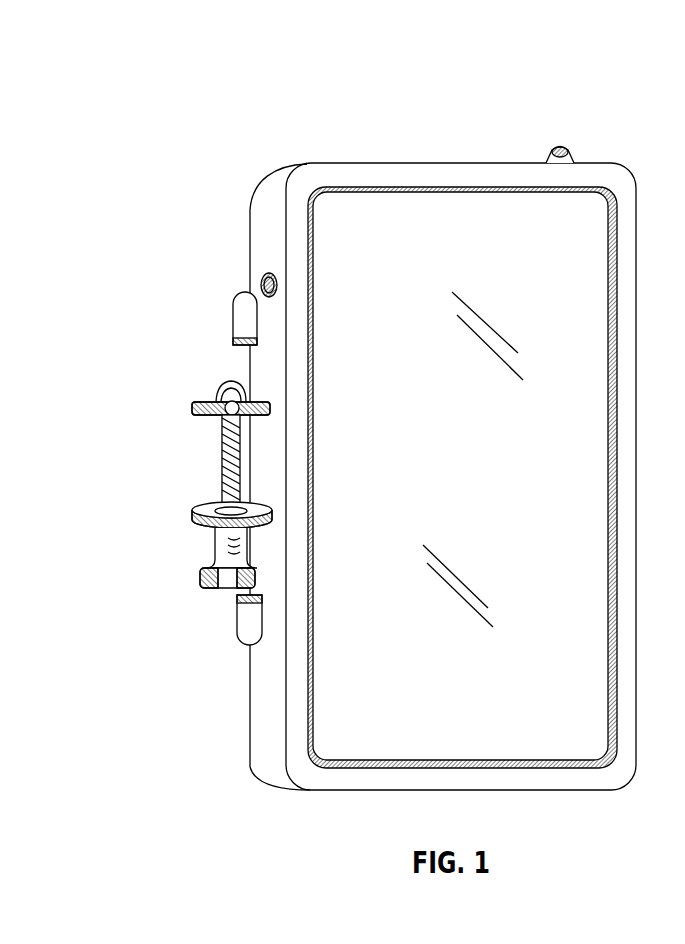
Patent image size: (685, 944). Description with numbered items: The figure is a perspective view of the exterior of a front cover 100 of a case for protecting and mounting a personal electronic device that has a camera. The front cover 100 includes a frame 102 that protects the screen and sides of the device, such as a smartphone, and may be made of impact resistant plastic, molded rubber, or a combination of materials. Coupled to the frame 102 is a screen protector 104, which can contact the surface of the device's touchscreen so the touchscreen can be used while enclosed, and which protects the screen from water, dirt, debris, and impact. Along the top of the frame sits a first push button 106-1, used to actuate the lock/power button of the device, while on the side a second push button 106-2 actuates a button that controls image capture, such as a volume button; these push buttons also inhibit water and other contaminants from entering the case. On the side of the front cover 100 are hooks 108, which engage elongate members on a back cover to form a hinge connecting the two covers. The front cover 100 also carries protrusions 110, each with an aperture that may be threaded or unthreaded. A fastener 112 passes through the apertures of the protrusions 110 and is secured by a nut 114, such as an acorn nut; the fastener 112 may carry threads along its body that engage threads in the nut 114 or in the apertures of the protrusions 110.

The front cover 100 is at (401, 142).
The frame 102 is at (357, 177).
The screen protector 104 is at (470, 277).
The first push button 106-1 is at (562, 143).
The second push button 106-2 is at (268, 266).
The hooks 108 is at (227, 323).
The protrusions 110 is at (183, 410).
The fastener 112 is at (213, 556).
The nut 114 is at (235, 378).